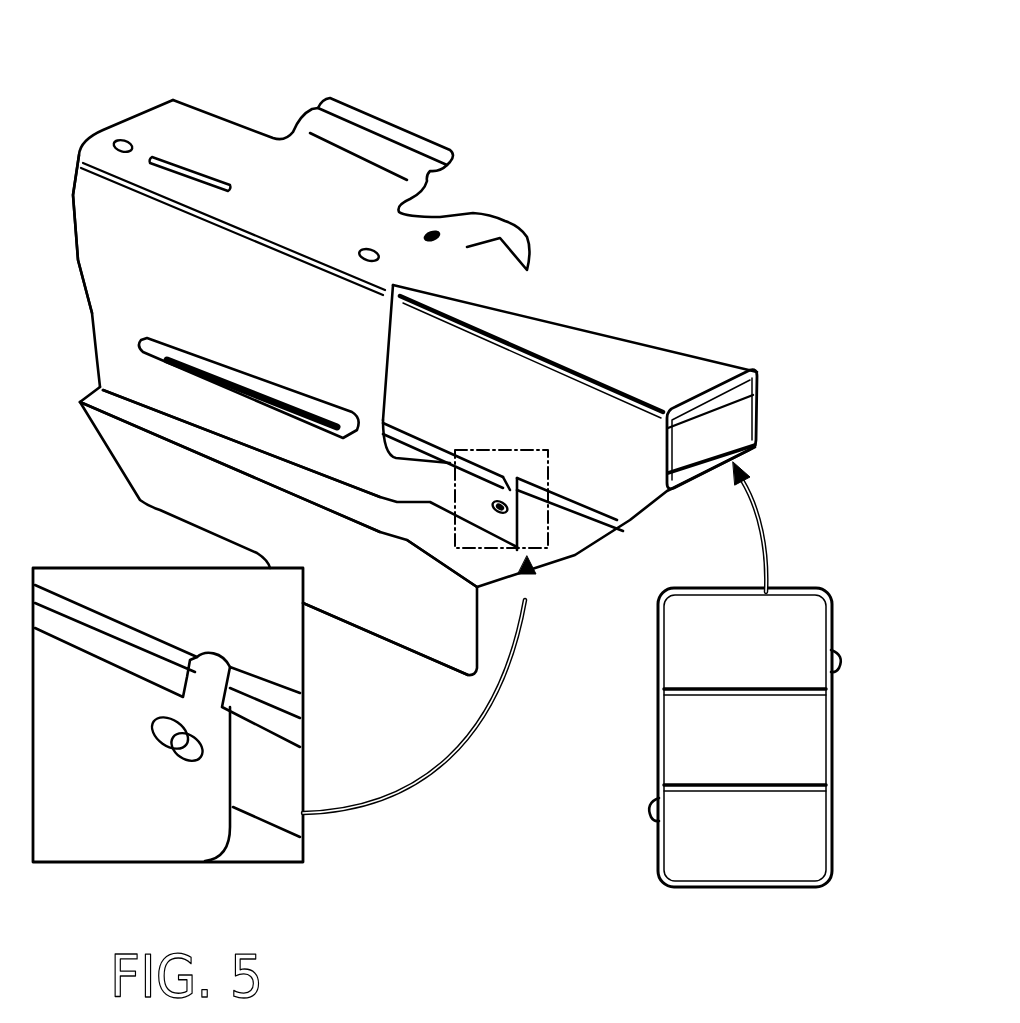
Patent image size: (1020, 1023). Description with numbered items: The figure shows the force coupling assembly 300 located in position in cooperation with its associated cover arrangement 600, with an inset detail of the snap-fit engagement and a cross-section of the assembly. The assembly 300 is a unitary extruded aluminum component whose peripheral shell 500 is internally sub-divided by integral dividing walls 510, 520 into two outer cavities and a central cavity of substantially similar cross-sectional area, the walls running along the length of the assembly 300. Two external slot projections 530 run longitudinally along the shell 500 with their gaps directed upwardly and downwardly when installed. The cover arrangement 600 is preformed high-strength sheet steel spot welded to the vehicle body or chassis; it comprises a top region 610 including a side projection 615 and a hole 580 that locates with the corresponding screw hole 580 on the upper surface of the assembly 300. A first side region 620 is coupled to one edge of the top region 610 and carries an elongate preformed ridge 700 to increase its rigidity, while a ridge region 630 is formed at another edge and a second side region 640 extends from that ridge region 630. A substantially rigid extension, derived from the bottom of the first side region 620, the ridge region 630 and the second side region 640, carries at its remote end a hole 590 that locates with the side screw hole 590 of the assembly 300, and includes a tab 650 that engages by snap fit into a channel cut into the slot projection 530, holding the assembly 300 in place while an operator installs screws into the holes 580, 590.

The coupling assembly 300 is at (625, 290).
The peripheral shell 500 is at (720, 378).
The dividing wall 510 is at (716, 447).
The dividing wall 520 is at (688, 476).
The external slot projection 530 is at (610, 533).
The screw hole 580 is at (436, 231).
The screw hole 590 is at (520, 538).
The cover arrangement 600 is at (243, 77).
The top region 610 is at (233, 216).
The side projection 615 is at (367, 148).
The first side region 620 is at (119, 234).
The ridge region 630 is at (140, 412).
The second side region 640 is at (390, 607).
The tab 650 is at (514, 478).
The elongate preformed ridge 700 is at (158, 353).